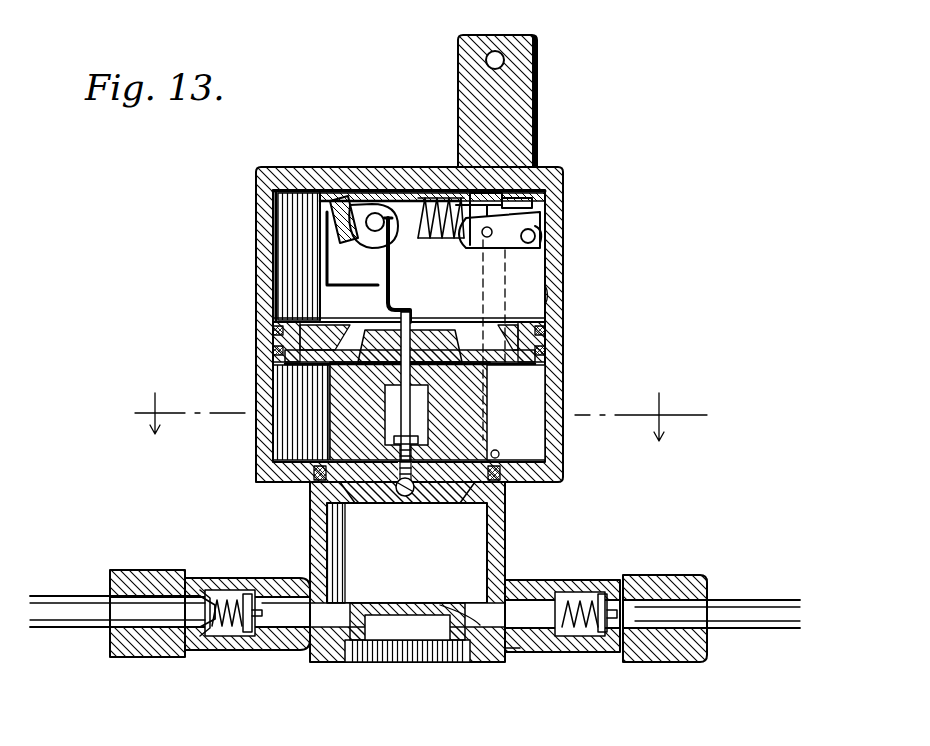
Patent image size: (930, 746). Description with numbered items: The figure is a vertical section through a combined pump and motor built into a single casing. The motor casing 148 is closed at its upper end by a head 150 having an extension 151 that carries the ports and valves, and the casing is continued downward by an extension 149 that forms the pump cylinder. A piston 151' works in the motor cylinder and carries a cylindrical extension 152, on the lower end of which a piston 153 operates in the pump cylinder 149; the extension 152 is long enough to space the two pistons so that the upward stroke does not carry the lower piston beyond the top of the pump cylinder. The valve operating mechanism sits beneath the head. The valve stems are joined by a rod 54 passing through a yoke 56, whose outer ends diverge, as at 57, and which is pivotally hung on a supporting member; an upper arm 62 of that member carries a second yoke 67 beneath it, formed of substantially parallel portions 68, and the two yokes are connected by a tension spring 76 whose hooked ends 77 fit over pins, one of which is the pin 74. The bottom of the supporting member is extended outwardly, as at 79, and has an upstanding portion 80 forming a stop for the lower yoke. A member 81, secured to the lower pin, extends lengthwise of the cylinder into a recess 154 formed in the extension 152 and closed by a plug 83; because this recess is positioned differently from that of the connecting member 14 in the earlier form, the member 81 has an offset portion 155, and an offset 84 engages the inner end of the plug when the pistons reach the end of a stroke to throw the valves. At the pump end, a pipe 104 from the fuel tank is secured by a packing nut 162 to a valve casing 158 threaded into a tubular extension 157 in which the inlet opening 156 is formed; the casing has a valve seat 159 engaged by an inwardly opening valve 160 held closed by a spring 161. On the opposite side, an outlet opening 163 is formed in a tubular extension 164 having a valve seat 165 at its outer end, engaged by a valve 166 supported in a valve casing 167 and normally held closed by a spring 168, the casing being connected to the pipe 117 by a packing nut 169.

The connecting member 14 is at (420, 417).
The motor casing 148 is at (578, 340).
The extension of head 151 is at (517, 101).
The piston 151' is at (578, 288).
The head 150 is at (352, 186).
The upper arm of supporting member 62 is at (345, 192).
The outwardly extended bottom of supporting member 79 is at (312, 326).
The upstanding portion 80 is at (378, 287).
The yoke 67 is at (330, 200).
The parallel portions of yoke 68 is at (366, 230).
The offset portion 155 is at (400, 298).
The tension spring 76 is at (440, 212).
The yoke 56 is at (558, 188).
The hooked end of spring 77 is at (545, 232).
The rod 54 is at (488, 240).
The pin 74 is at (530, 246).
The diverging outer ends of yoke 57 is at (548, 248).
The plug 83 is at (440, 325).
The operating member 81 is at (418, 315).
The cylindrical extension 152 is at (468, 425).
The recess 154 is at (420, 412).
The pump cylinder 149 is at (507, 535).
The outlet opening 163 is at (482, 612).
The piston 153 is at (420, 503).
The offset end 84 is at (400, 500).
The valve casing 158 is at (245, 575).
The packing nut 162 is at (132, 575).
The pipe 104 is at (60, 627).
The valve seat 159 is at (197, 588).
The inwardly opening valve 160 is at (205, 636).
The spring 161 is at (228, 637).
The tubular extension 157 is at (256, 650).
The inlet opening 156 is at (290, 652).
The valve seat 165 is at (540, 648).
The packing nut 169 is at (690, 575).
The main pipe 117 is at (728, 600).
The valve 166 is at (570, 595).
The valve casing 167 is at (600, 592).
The tubular extension 164 is at (520, 652).
The spring 168 is at (590, 640).